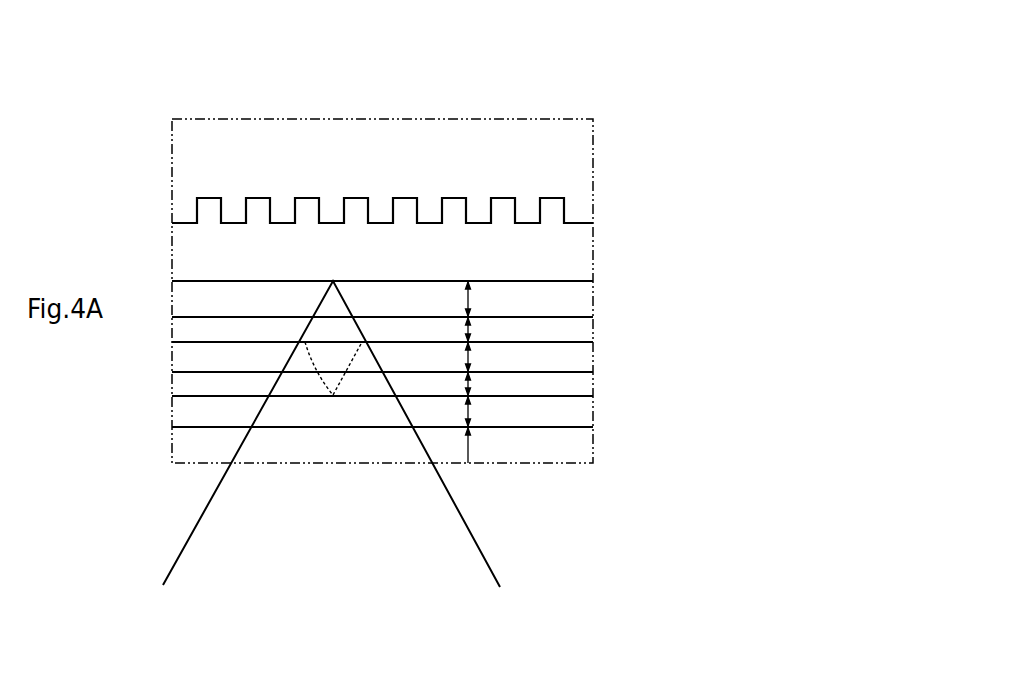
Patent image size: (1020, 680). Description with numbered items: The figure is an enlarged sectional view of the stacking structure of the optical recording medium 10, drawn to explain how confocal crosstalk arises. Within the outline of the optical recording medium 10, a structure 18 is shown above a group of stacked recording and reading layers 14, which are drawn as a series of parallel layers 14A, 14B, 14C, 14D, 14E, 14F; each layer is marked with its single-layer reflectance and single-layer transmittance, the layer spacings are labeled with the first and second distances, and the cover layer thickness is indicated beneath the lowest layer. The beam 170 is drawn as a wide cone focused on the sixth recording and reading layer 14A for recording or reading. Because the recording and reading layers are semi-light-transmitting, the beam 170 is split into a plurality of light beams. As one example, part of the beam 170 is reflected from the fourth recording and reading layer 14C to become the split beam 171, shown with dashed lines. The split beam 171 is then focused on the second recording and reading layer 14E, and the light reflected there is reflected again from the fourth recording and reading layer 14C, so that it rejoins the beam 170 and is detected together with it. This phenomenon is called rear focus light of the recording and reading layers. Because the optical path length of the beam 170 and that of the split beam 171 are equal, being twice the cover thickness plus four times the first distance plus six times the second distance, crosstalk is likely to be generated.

The optical recording medium 10 is at (383, 108).
The electrode / grating structure 18 is at (557, 198).
The multilayer film 14 is at (467, 468).
The sixth recording and reading layer 14A is at (577, 281).
The second layer (r5, t5) 14B is at (573, 317).
The fourth recording and reading layer 14C is at (563, 342).
The fourth layer (r3, t3) 14D is at (552, 372).
The second recording and reading layer 14E is at (545, 396).
The sixth layer (r1, t1) 14F is at (533, 427).
The beam 170 is at (452, 503).
The split beam 171 is at (316, 372).